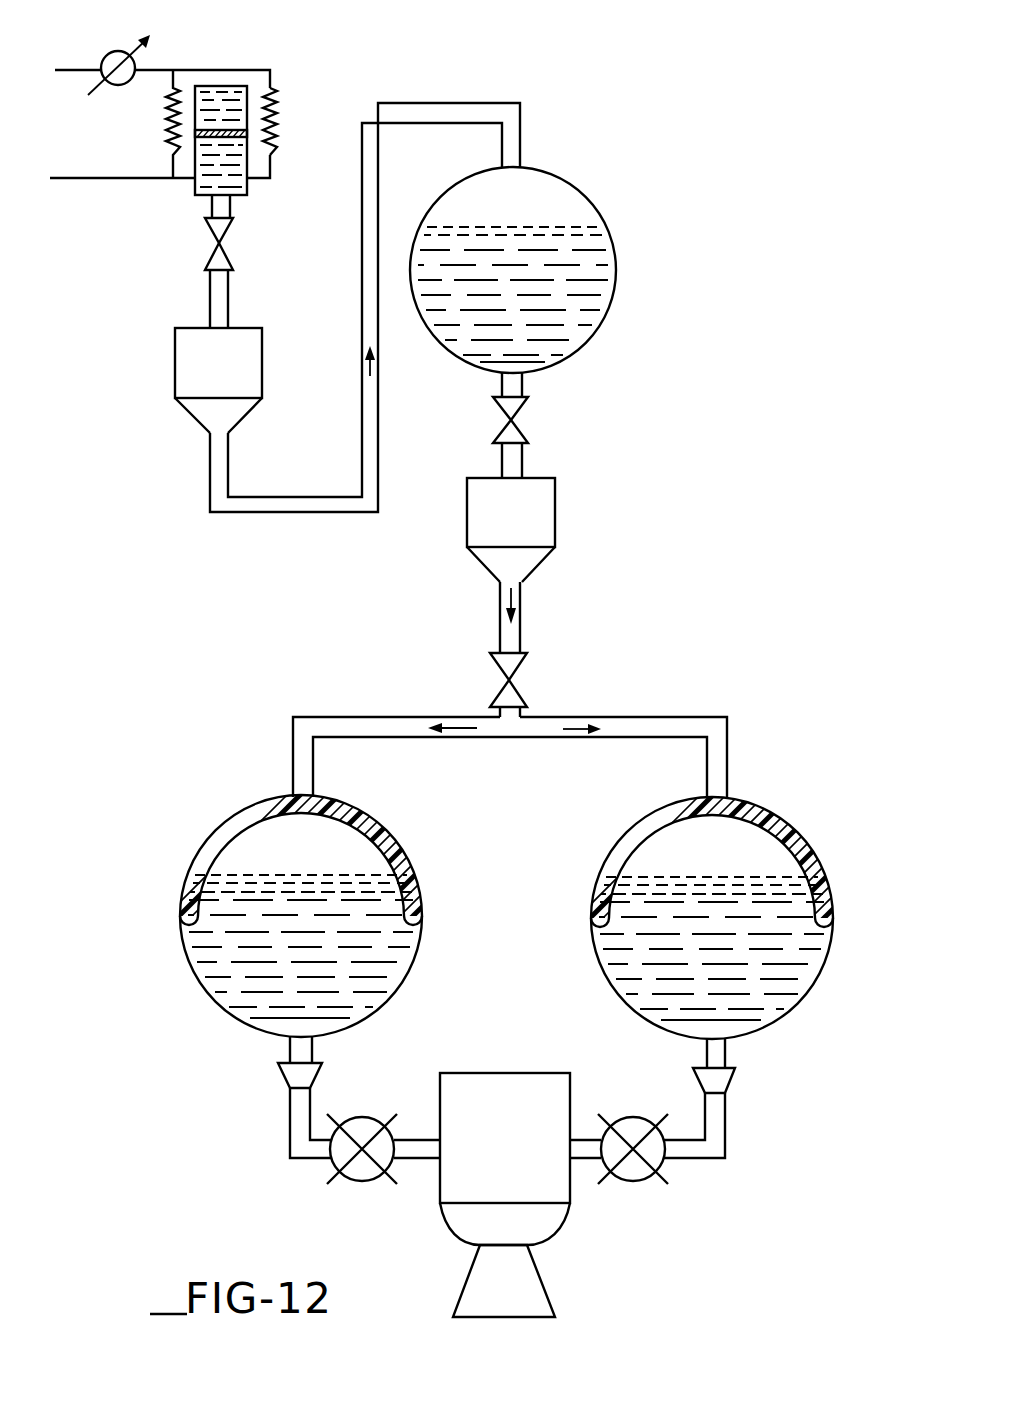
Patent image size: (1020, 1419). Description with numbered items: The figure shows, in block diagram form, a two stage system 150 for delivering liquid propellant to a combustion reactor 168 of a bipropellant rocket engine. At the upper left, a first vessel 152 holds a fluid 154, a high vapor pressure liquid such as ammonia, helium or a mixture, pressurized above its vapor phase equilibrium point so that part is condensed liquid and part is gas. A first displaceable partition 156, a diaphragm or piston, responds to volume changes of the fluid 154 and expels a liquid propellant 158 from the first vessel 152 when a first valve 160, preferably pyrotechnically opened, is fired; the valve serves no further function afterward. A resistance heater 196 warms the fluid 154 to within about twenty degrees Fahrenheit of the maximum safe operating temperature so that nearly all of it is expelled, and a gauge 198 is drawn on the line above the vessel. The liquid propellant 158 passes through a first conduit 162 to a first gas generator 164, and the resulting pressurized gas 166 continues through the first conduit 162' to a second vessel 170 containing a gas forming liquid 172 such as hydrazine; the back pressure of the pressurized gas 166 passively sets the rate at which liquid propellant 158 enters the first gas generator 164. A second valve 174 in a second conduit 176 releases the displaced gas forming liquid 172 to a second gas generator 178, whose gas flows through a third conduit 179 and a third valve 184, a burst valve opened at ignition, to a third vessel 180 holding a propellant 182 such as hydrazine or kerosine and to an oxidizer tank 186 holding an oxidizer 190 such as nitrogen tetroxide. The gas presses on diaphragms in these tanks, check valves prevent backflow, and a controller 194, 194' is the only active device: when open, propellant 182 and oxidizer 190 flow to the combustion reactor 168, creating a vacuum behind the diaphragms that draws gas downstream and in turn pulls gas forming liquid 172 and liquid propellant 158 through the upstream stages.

The two stage system 150 is at (336, 46).
The first vessel 152 is at (189, 203).
The fluid 154 is at (222, 110).
The first displaceable partition 156 is at (244, 134).
The liquid propellant 158 is at (232, 184).
The first valve 160 is at (226, 262).
The first conduit 162 is at (255, 299).
The first conduit 162' is at (365, 307).
The first gas generator 164 is at (186, 367).
The pressurized gas 166 is at (404, 384).
The combustion reactor 168 is at (553, 1188).
The second vessel 170 is at (633, 237).
The gas forming liquid 172 is at (603, 292).
The second valve 174 is at (515, 436).
The second conduit 176 is at (518, 466).
The second gas generator 178 is at (540, 518).
The third conduit 179 is at (545, 616).
The third vessel 180 is at (205, 1021).
The propellant 182 is at (200, 942).
The third valve 184 is at (516, 698).
The oxidizer tank 186 is at (786, 1031).
The oxidizer 190 is at (802, 952).
The controller 194 is at (383, 1117).
The controller 194' is at (619, 1121).
The resistance heater 196 is at (272, 110).
The pressure gauge 198 is at (112, 50).